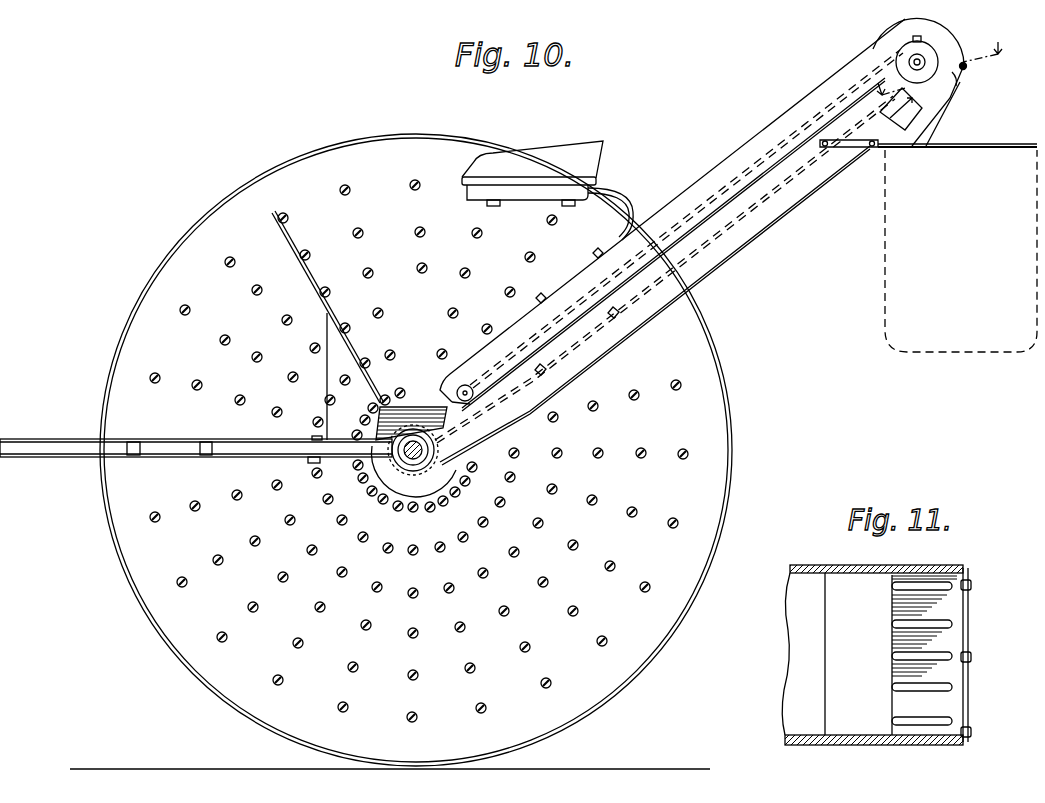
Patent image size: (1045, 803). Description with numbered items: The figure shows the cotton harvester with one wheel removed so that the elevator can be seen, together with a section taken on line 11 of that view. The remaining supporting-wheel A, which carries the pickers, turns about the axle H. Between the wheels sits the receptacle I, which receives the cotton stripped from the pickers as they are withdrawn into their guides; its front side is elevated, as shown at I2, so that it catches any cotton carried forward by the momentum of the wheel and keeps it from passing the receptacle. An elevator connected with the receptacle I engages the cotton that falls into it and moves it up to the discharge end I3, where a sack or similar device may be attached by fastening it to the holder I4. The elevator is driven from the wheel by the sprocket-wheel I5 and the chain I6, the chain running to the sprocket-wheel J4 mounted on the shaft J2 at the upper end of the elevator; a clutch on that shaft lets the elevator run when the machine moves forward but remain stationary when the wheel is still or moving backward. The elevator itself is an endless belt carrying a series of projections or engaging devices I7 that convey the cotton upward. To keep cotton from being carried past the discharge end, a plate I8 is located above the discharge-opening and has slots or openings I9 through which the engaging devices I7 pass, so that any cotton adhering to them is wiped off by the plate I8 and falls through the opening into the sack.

In FIG. 10, the supporting-wheel A is at (228, 197).
In FIG. 10, the axle H is at (427, 465).
In FIG. 10, the receptacle I is at (408, 410).
In FIG. 10, the elevated front side of receptacle I2 is at (300, 267).
In FIG. 10, the discharge end I3 is at (945, 92).
In FIG. 11, the discharge end I3 is at (850, 585).
In FIG. 10, the holder I4 is at (993, 148).
In FIG. 10, the sprocket-wheel I5 is at (393, 473).
In FIG. 10, the chain I6 is at (672, 237).
In FIG. 10, the engaging devices I7 is at (445, 388).
In FIG. 10, the plate I8 is at (966, 69).
In FIG. 11, the plate I8 is at (945, 640).
In FIG. 10, the slots or openings I9 is at (958, 76).
In FIG. 11, the slots or openings I9 is at (897, 687).
In FIG. 10, the shaft J2 is at (915, 58).
In FIG. 10, the sprocket-wheel J4 is at (868, 68).
In FIG. 10, the section line 11 11 is at (941, 69).